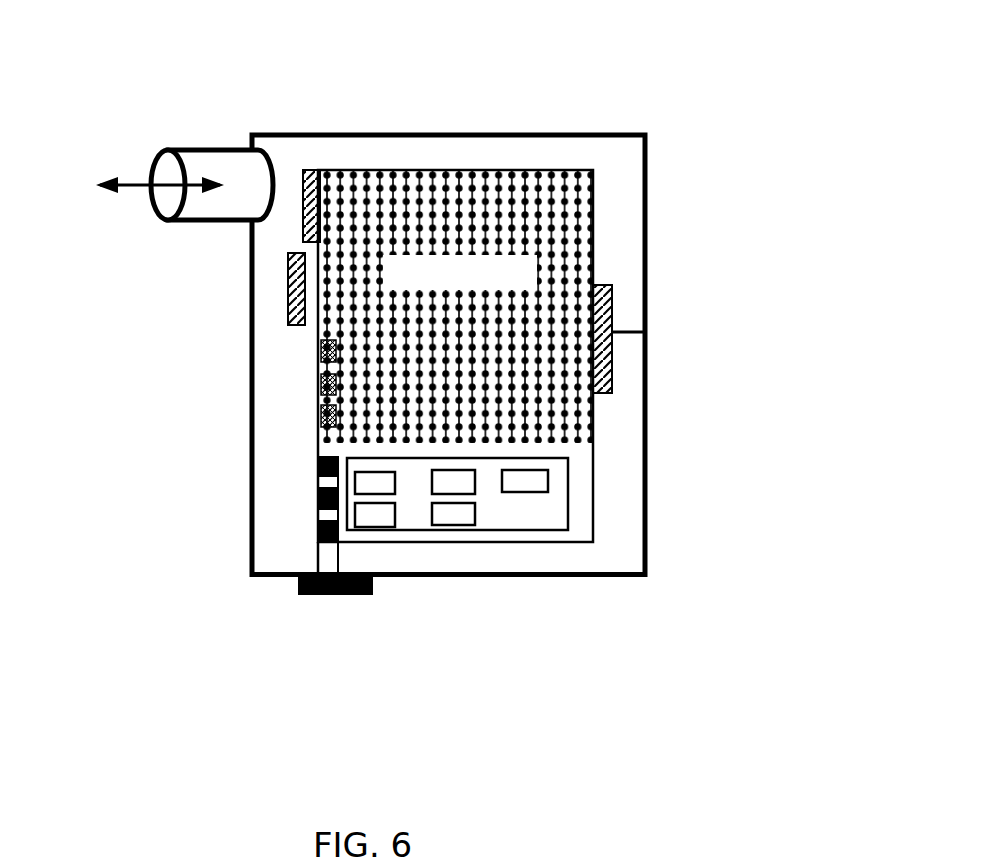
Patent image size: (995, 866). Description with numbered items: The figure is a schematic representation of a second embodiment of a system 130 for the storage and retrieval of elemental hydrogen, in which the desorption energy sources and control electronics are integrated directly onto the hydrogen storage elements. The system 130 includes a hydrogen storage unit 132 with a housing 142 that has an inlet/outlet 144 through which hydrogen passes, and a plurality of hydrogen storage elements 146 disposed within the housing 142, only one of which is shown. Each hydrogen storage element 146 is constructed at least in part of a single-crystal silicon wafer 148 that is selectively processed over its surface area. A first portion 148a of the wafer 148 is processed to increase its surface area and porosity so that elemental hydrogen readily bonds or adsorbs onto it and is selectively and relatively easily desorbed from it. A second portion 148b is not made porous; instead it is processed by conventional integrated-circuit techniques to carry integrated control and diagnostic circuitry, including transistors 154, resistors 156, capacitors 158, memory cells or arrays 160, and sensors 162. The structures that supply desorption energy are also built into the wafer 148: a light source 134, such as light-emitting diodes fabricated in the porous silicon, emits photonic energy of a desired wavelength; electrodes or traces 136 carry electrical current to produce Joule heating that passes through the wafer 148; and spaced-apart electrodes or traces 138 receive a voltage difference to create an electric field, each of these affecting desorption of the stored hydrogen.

The system for the storage and retrieval of elemental hydrogen 130 is at (668, 97).
The hydrogen storage unit 132 is at (660, 192).
The light source 134 is at (321, 386).
The electrodes or traces 136 is at (286, 288).
The spaced-apart electrodes or traces 138 is at (300, 218).
The housing 142 is at (598, 580).
The inlet/outlet 144 is at (207, 150).
The hydrogen storage element 146 is at (600, 438).
The single-crystal silicon wafer 148 is at (597, 466).
The first portion 148a is at (492, 286).
The second portion 148b is at (560, 528).
The transistors 154 is at (378, 486).
The resistors 156 is at (455, 480).
The capacitors 158 is at (540, 483).
The memory cells or arrays 160 is at (390, 520).
The sensors 162 is at (450, 520).